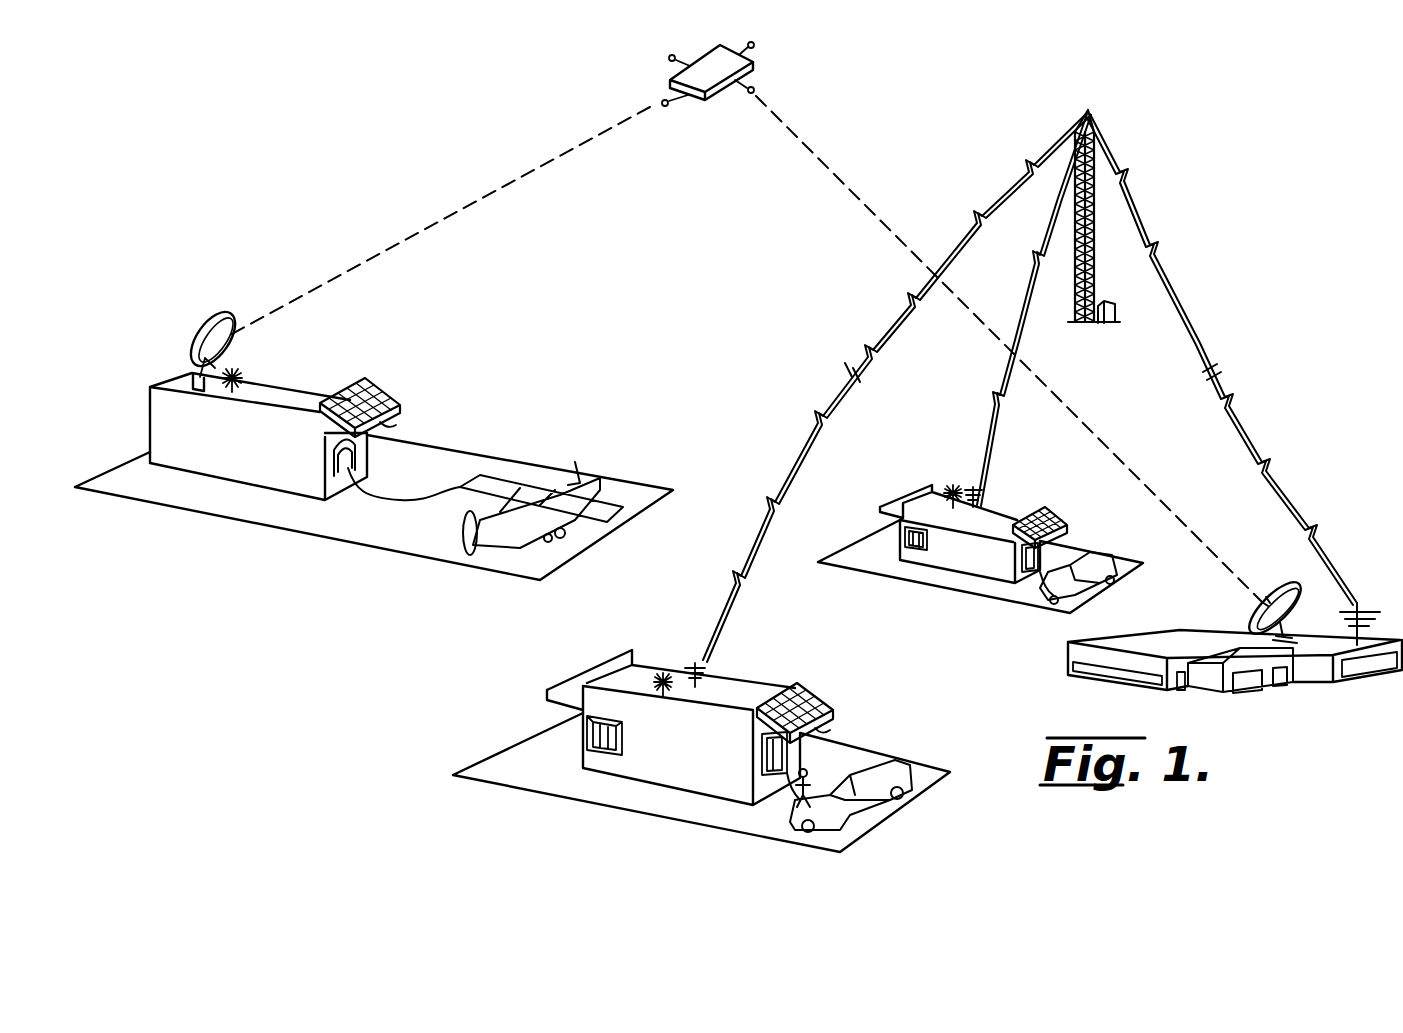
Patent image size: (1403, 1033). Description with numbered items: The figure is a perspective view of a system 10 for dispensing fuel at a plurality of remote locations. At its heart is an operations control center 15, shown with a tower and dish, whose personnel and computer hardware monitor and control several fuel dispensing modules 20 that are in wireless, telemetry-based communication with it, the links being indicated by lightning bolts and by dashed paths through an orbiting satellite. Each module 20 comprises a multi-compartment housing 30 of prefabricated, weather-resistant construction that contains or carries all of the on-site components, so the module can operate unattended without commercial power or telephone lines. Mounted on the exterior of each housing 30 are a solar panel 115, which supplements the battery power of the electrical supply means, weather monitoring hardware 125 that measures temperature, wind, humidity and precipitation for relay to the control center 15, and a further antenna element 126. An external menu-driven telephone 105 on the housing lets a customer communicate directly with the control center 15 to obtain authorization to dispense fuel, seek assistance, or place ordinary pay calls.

The system for dispensing fuel 10 is at (1192, 204).
The operations control center 15 is at (1272, 692).
The fuel dispensing module 20 is at (301, 351).
The multi-compartment housing 30 is at (190, 468).
The external menu-driven telephone 105 is at (907, 549).
The solar panel 115 is at (378, 392).
The weather monitoring hardware 125 is at (246, 390).
The antenna 126 is at (649, 709).